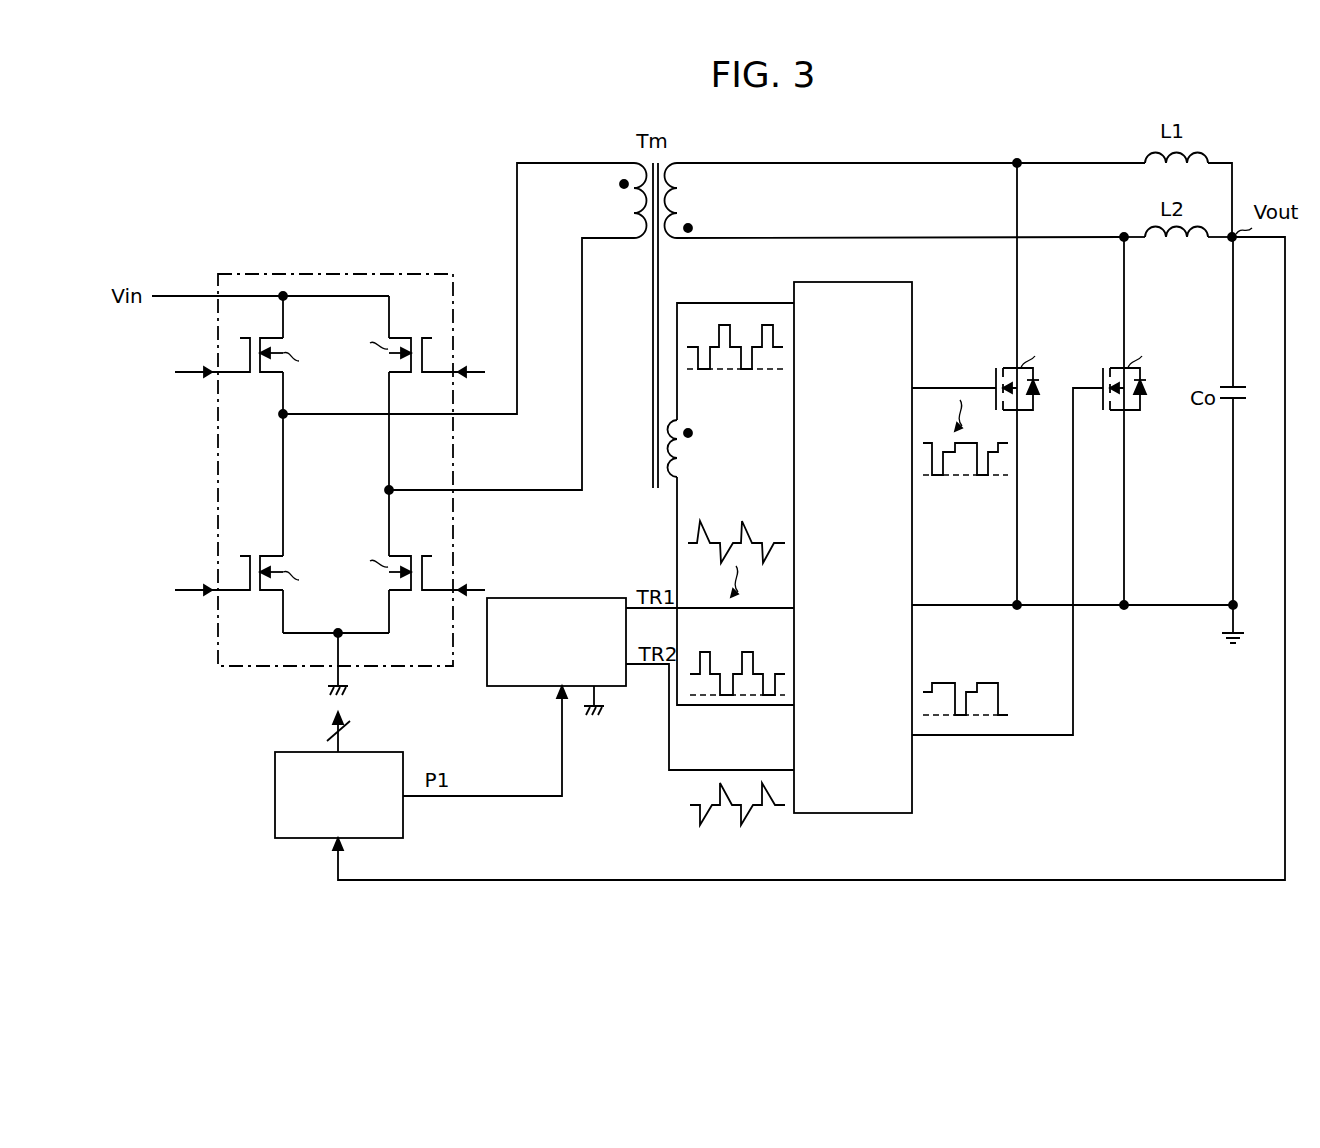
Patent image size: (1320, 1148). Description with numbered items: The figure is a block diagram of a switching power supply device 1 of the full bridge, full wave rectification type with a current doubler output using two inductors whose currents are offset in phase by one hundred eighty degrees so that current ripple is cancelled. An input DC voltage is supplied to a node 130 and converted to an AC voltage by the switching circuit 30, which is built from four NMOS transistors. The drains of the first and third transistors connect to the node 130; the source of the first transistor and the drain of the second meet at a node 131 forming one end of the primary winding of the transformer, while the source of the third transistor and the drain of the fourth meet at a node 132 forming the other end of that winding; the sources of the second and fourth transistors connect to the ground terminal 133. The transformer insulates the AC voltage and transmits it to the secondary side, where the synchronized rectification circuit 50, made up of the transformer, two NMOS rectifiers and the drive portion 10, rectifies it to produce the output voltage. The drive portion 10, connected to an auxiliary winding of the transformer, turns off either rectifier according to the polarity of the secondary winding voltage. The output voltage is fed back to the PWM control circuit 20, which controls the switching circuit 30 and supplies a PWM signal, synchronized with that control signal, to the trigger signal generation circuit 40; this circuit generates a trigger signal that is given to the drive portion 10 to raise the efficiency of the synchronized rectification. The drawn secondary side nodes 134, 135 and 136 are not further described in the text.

The switching power supply device 1 is at (758, 888).
The drive portion 10 is at (860, 814).
The PWM control circuit 20 is at (273, 796).
The switching circuit 30 is at (344, 272).
The trigger signal generation circuit 40 is at (573, 598).
The synchronized rectification circuit 50 is at (1025, 764).
The node 130 is at (283, 296).
The node 131 is at (281, 414).
The node 132 is at (387, 490).
The ground terminal 133 is at (340, 635).
The first secondary winding terminal node 134 is at (1020, 160).
The secondary ground node 135 is at (1016, 604).
The second secondary winding terminal node 136 is at (1122, 236).